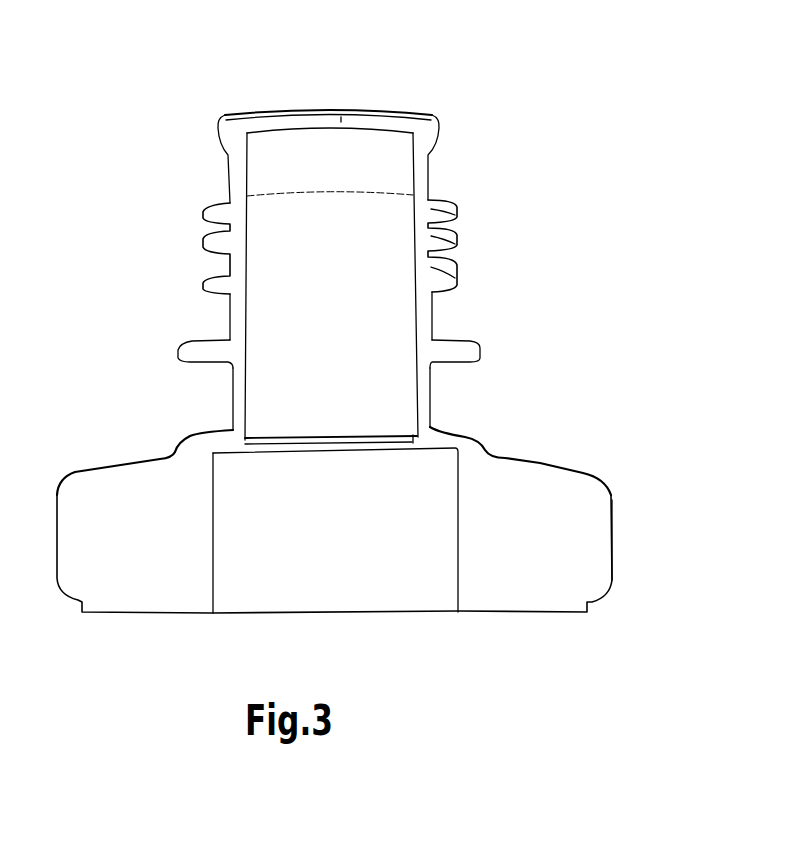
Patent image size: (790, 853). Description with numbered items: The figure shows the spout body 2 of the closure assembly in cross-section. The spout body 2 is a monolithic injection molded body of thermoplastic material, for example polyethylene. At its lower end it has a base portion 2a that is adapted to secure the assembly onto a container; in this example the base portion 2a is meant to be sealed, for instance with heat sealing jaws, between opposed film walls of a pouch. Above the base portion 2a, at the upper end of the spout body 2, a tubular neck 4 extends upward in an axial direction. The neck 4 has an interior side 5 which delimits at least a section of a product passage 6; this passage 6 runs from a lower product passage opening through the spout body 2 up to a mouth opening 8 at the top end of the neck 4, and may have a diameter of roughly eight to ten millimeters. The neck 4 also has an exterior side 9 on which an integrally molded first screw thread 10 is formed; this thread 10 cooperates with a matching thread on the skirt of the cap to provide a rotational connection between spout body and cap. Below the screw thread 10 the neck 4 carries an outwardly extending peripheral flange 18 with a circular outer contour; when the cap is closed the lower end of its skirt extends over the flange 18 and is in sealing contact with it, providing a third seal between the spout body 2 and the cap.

The mouth opening 8 is at (383, 81).
The product passage 6 is at (346, 289).
The first screw thread 10 is at (472, 233).
The tubular neck 4 is at (435, 322).
The peripheral flange 18 is at (465, 352).
The exterior side 9 is at (433, 393).
The interior side 5 is at (247, 388).
The spout body 2 is at (530, 592).
The base portion 2a is at (617, 458).